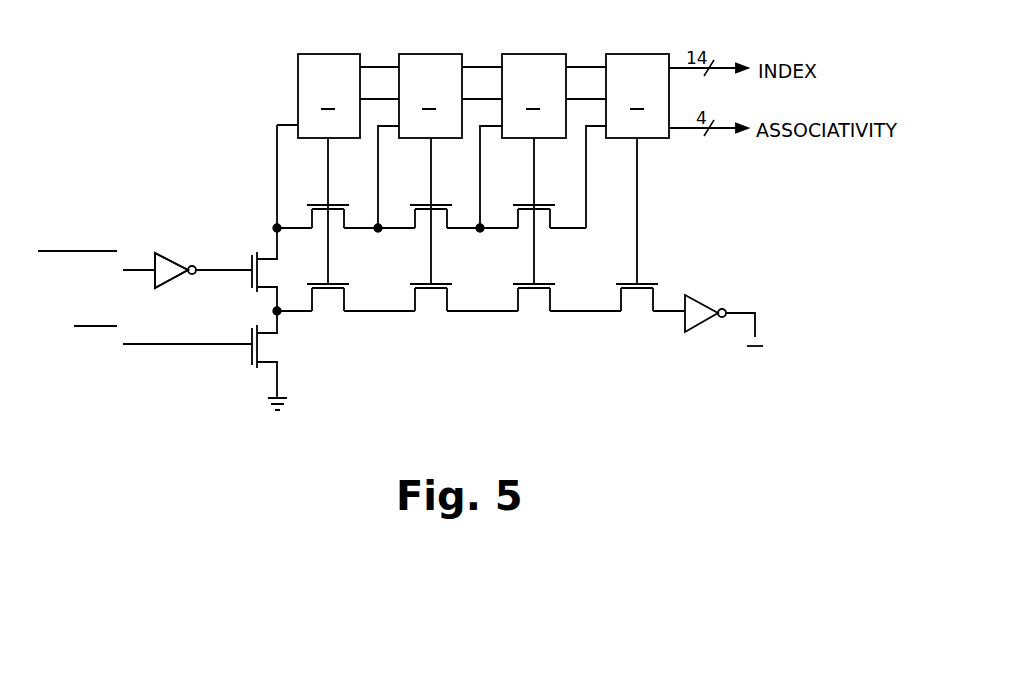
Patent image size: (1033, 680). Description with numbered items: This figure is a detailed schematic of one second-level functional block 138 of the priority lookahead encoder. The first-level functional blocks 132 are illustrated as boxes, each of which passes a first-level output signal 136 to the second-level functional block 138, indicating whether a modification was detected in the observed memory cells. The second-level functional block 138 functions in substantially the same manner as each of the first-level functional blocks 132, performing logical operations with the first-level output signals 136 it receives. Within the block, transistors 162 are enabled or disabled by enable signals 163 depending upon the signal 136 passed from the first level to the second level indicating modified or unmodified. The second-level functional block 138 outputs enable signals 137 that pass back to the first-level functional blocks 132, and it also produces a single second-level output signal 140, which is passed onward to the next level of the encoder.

The Level 1 functional block 132 is at (398, 58).
The Level 2 functional block 138 is at (212, 163).
The Level 1 output signal 136 is at (137, 268).
The enable signal 163 is at (382, 193).
The transistor 162 is at (479, 332).
The enable signal 137 is at (757, 328).
The Level 2 output signal 140 is at (755, 337).